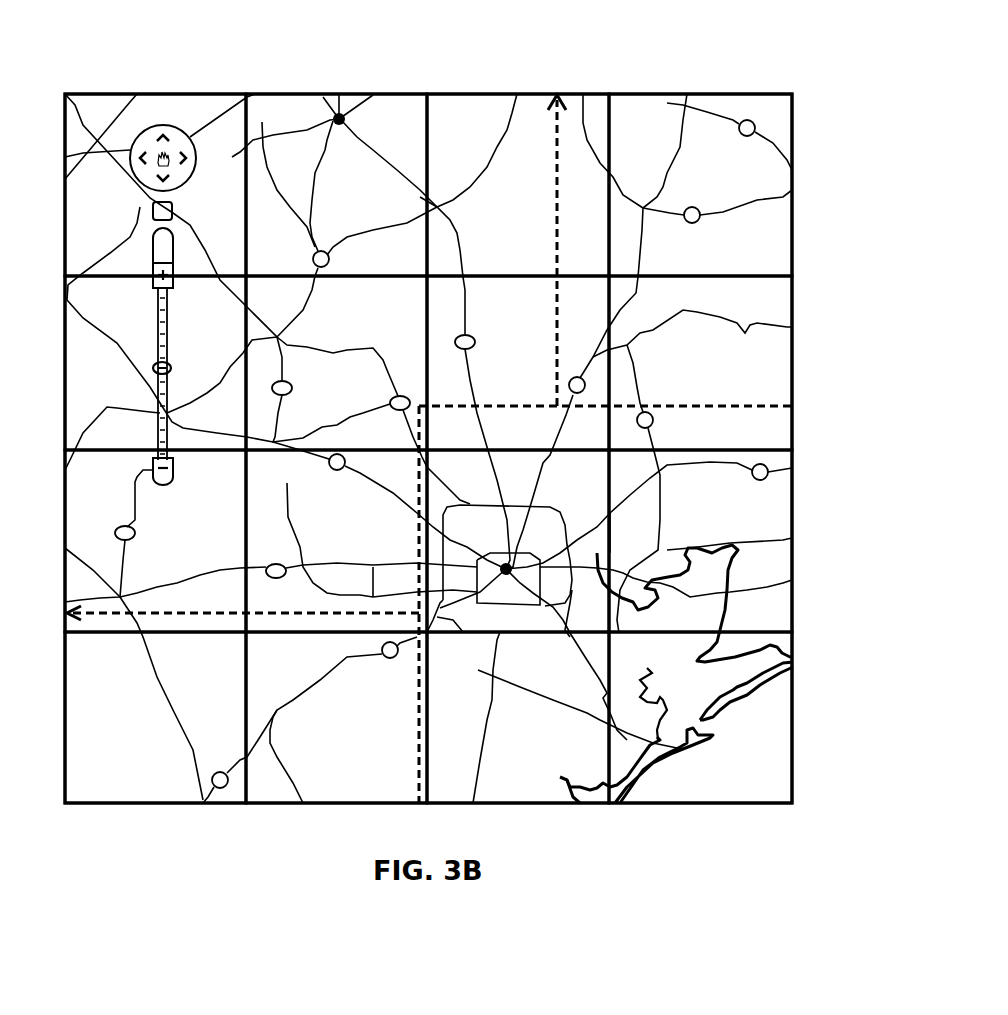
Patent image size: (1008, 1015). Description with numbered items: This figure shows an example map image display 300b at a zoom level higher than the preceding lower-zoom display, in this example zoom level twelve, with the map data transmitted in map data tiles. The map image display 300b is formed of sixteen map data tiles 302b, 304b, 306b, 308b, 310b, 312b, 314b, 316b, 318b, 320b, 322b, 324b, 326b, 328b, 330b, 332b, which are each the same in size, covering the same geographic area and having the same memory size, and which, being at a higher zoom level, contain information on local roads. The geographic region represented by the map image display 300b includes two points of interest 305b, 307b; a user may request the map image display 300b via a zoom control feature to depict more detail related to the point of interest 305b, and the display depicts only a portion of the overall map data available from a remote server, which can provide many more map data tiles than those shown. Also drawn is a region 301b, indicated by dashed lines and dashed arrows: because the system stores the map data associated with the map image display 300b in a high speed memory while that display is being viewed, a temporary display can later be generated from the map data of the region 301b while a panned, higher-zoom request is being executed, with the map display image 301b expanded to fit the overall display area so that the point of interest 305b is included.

The map image display 300b is at (562, 68).
The region 301b is at (751, 406).
The map data tile 302b is at (123, 119).
The map data tile 304b is at (302, 119).
The point of interest 305b is at (562, 516).
The map data tile 306b is at (481, 119).
The point of interest 307b is at (339, 113).
The map data tile 308b is at (664, 119).
The map data tile 310b is at (123, 301).
The map data tile 312b is at (302, 301).
The map data tile 314b is at (481, 301).
The map data tile 316b is at (664, 301).
The map data tile 318b is at (123, 475).
The map data tile 320b is at (302, 475).
The map data tile 322b is at (481, 475).
The map data tile 324b is at (664, 475).
The map data tile 326b is at (123, 657).
The map data tile 328b is at (302, 657).
The map data tile 330b is at (481, 657).
The map data tile 332b is at (664, 657).